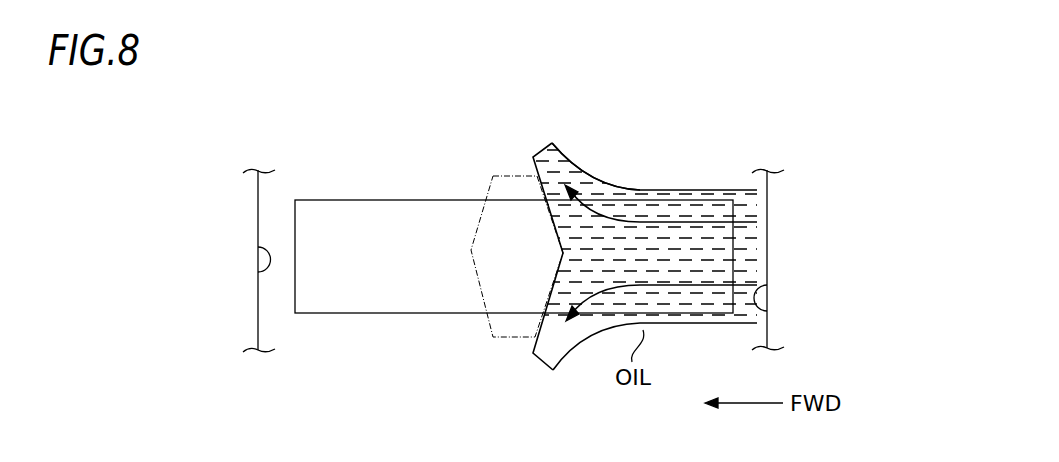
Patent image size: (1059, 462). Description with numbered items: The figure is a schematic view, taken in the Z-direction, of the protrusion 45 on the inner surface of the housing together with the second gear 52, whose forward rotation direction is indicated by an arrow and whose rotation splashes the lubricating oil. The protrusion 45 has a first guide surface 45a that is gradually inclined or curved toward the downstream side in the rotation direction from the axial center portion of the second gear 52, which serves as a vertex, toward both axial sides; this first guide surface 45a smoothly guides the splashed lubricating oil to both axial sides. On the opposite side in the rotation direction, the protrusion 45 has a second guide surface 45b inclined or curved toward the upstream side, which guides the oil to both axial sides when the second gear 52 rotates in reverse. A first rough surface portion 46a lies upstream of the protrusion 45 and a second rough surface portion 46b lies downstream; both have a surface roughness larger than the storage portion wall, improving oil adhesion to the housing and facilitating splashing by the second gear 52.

The protrusion 45 is at (520, 177).
The first guide surface 45a is at (588, 240).
The second guide surface 45b is at (470, 250).
The first rough surface portion 46a is at (768, 303).
The second rough surface portion 46b is at (258, 268).
The second gear 52 is at (373, 313).